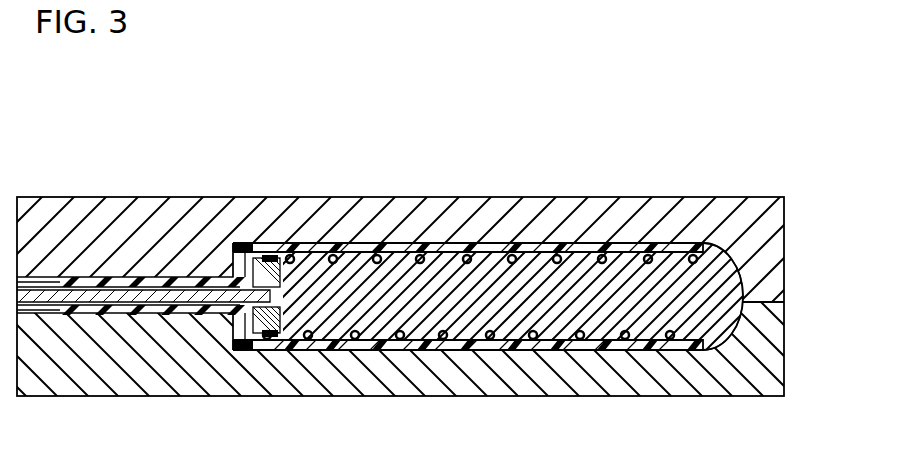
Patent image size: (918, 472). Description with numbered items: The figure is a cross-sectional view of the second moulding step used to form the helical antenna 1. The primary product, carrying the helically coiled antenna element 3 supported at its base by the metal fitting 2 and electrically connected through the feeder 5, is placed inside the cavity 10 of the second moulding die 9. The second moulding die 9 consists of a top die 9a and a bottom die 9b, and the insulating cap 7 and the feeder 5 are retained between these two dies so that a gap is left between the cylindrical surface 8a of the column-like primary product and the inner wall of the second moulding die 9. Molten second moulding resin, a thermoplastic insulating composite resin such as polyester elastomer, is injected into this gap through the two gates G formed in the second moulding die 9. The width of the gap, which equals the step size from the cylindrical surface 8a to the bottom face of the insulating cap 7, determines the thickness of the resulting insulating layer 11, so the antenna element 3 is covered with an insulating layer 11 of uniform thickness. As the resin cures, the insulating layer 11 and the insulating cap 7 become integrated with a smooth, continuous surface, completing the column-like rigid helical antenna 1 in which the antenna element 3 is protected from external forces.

The helical antenna 1 is at (712, 312).
The metal fitting 2 is at (283, 243).
The antenna element 3 is at (558, 243).
The feeder 5 is at (33, 296).
The insulating cap 7 is at (715, 270).
The cylindrical surface 8a is at (332, 346).
The second moulding die 9 is at (459, 236).
The top die 9a is at (767, 253).
The bottom die 9b is at (775, 325).
The cavity 10 is at (623, 242).
The insulating layer 11 is at (385, 246).
The gates G is at (231, 237).